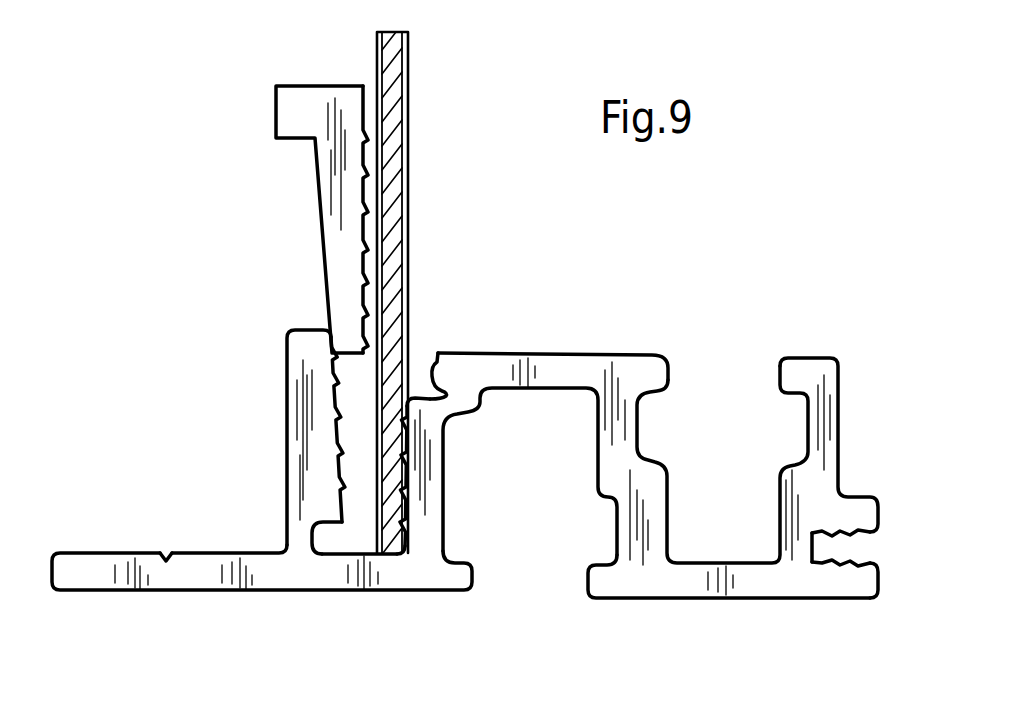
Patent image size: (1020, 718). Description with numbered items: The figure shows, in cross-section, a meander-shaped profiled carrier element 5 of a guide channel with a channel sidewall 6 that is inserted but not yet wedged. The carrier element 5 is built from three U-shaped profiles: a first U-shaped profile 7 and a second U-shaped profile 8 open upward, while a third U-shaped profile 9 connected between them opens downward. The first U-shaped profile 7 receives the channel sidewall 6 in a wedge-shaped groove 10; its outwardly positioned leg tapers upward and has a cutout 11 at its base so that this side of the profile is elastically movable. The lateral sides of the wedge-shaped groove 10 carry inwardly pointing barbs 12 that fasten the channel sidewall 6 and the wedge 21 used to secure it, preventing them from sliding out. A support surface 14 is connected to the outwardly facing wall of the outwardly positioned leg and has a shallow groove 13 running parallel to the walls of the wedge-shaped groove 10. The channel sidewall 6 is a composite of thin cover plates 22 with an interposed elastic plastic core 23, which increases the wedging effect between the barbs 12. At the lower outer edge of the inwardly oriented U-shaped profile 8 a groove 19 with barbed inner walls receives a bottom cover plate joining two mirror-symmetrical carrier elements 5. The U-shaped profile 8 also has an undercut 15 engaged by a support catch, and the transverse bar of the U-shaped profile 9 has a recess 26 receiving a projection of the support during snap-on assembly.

The profiled carrier element 5 is at (262, 499).
The channel sidewall 6 is at (396, 281).
The first U-shaped profile 7 is at (637, 472).
The second U-shaped profile 8 is at (763, 360).
The third U-shaped profile 9 is at (563, 593).
The wedge-shaped groove 10 is at (357, 545).
The recess 11 is at (320, 540).
The barb 12 is at (367, 215).
The shallow groove 13 is at (167, 556).
The support surface 14 is at (82, 573).
The undercut 15 is at (653, 412).
The groove 19 is at (848, 552).
The wedge 21 is at (290, 119).
The cover plate 22 is at (376, 42).
The plastic core 23 is at (417, 125).
The recess 26 is at (433, 378).